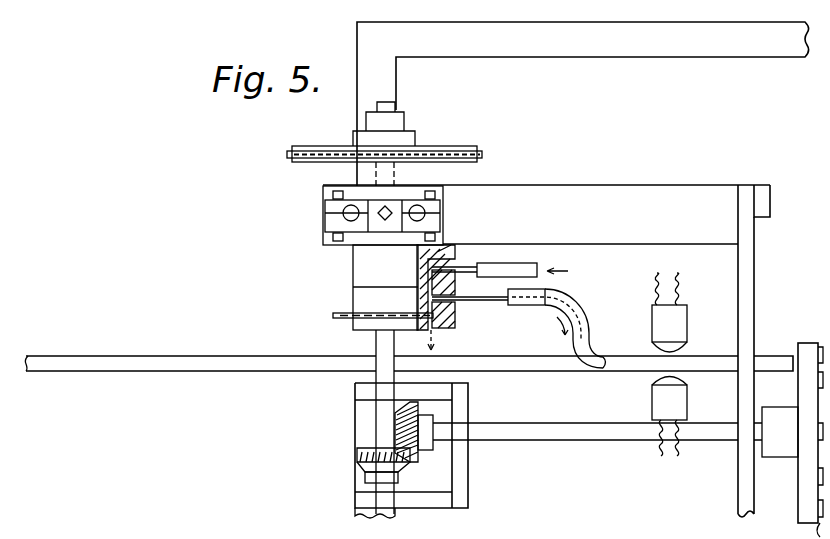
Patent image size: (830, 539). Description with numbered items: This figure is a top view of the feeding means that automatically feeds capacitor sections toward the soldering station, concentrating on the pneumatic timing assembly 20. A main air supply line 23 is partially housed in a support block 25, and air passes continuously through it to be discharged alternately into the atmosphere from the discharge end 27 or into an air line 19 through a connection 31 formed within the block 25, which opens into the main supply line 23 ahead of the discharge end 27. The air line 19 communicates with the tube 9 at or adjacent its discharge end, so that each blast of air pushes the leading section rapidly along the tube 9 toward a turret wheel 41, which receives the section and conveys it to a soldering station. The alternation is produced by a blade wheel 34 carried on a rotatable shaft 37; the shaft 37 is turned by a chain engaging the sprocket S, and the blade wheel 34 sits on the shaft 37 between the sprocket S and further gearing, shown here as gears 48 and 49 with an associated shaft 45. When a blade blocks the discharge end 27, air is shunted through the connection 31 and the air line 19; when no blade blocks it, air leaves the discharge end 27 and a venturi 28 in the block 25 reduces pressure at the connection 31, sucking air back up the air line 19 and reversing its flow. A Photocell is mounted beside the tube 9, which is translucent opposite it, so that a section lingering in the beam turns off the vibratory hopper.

The sprocket S is at (297, 163).
The tube 9 is at (243, 372).
The air line 19 is at (502, 305).
The timing assembly 20 is at (344, 276).
The main air supply line 23 is at (468, 266).
The support block 25 is at (455, 316).
The discharge end 27 is at (434, 336).
The venturi 28 is at (458, 248).
The connection 31 is at (447, 298).
The blade wheel 34 is at (333, 315).
The rotatable shaft 37 is at (376, 344).
The turret wheel 41 is at (805, 343).
The shaft 45 is at (610, 440).
The bevel gear 48 is at (419, 455).
The bevel gear 49 is at (357, 452).
The photocell Photocell is at (688, 396).